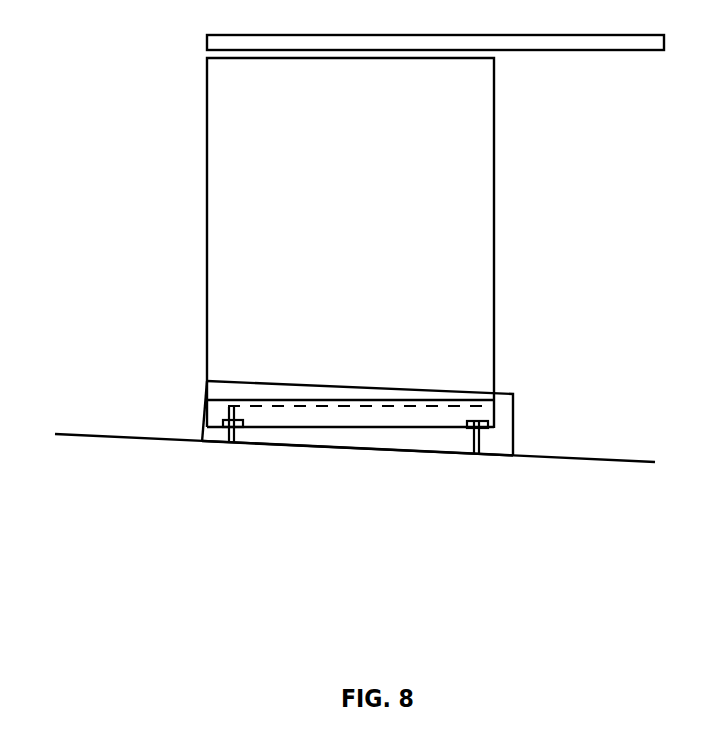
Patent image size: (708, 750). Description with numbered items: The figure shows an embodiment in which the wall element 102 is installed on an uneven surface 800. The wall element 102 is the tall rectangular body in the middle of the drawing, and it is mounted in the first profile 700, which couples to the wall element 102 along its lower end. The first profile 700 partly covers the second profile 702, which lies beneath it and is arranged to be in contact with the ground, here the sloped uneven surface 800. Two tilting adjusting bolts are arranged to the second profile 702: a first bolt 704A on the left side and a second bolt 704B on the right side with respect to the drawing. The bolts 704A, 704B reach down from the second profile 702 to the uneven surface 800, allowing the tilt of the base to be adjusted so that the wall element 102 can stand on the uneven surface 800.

The wall element 102 is at (207, 100).
The first profile 700 is at (266, 414).
The second profile 702 is at (208, 435).
The first bolt 704A is at (234, 441).
The second bolt 704B is at (478, 440).
The uneven surface 800 is at (619, 462).